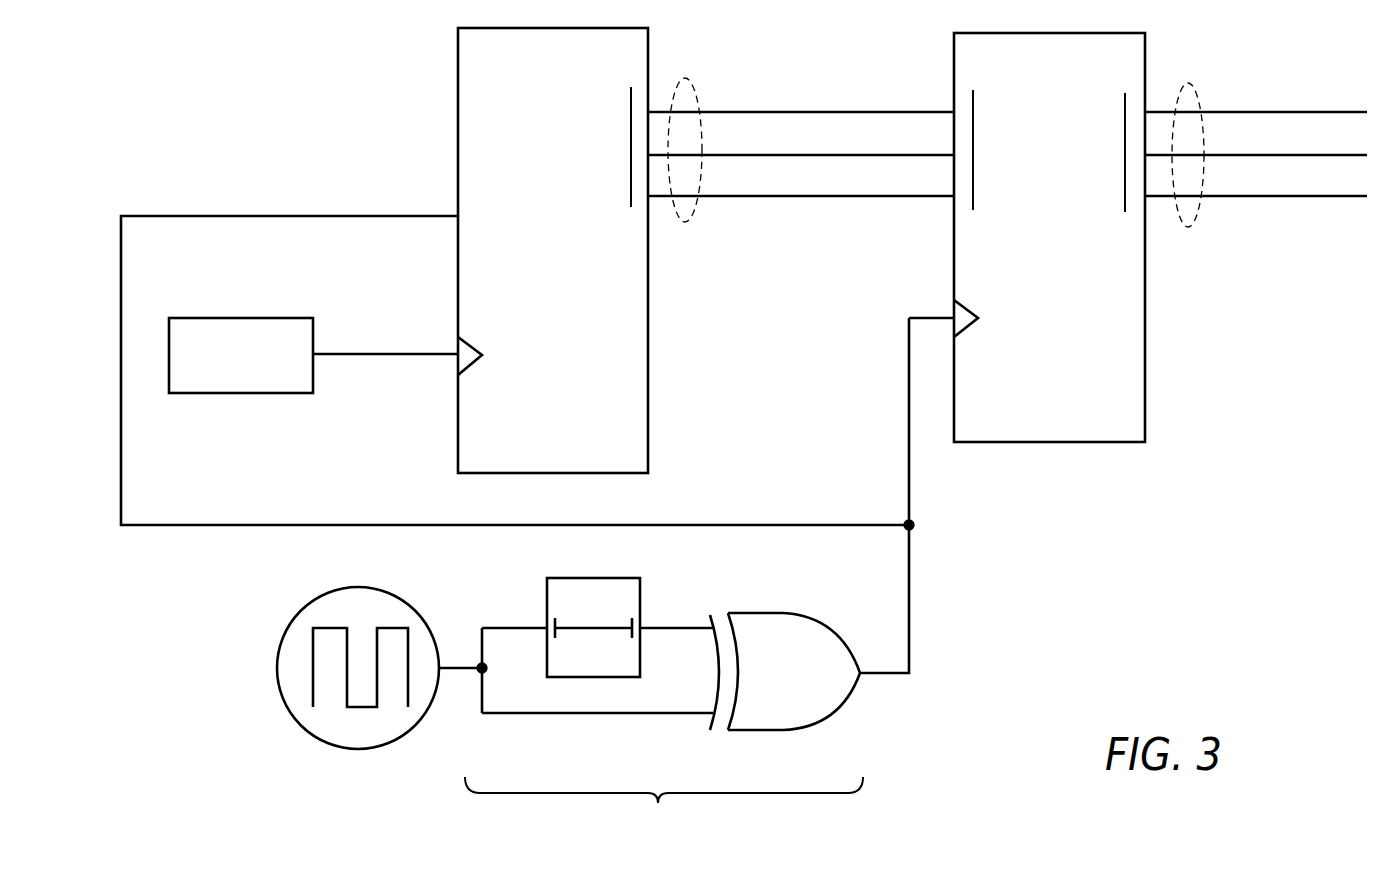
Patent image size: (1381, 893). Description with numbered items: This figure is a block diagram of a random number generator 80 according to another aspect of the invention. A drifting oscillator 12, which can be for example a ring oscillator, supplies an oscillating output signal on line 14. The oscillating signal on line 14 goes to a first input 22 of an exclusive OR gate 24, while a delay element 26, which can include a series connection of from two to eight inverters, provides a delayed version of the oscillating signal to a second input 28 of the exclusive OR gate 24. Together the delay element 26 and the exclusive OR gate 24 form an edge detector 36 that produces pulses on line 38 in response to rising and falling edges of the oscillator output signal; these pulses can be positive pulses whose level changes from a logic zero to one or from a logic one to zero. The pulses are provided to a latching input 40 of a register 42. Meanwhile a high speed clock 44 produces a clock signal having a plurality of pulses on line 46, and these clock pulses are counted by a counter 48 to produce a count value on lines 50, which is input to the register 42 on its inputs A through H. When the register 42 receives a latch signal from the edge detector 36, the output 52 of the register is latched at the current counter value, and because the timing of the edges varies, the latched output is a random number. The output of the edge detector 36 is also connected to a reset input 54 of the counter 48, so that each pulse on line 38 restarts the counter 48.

The drifting oscillator 12 is at (302, 727).
The line 14 is at (455, 672).
The first input 22 is at (655, 713).
The exclusive OR gate 24 is at (822, 712).
The delay element 26 is at (585, 578).
The second input 28 is at (680, 628).
The edge detector 36 is at (664, 810).
The line 38 is at (909, 596).
The latching input 40 is at (954, 305).
The register 42 is at (1146, 345).
The high speed clock 44 is at (240, 318).
The line 46 is at (383, 356).
The counter 48 is at (458, 95).
The lines 50 is at (688, 78).
The output 52 is at (1190, 83).
The reset input 54 is at (458, 216).
The random number generator 80 is at (1183, 658).